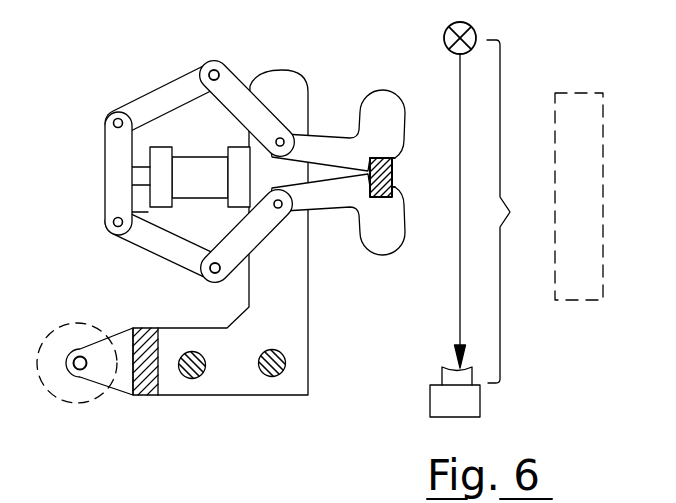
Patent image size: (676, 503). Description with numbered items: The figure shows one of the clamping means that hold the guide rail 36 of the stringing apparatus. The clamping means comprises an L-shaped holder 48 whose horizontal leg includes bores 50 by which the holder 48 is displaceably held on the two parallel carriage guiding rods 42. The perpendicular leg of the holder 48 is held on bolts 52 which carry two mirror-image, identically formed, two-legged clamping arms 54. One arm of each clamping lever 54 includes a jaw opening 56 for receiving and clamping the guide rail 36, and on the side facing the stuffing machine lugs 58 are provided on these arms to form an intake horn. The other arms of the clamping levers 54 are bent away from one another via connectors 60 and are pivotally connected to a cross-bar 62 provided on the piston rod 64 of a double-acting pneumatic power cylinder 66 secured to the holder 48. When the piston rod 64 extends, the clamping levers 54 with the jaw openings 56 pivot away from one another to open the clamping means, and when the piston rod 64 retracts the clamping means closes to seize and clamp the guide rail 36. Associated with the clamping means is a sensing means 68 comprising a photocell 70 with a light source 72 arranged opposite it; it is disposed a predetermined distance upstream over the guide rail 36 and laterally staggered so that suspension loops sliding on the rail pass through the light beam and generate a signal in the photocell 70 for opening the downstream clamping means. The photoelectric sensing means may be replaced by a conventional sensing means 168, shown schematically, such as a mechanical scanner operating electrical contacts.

The guide rail 36 is at (395, 182).
The carriage guiding rods 42 is at (283, 362).
The L-shaped holder 48 is at (299, 300).
The bores 50 is at (182, 378).
The bolts 52 is at (283, 142).
The clamping arms 54 is at (233, 83).
The jaw openings 56 is at (392, 152).
The lugs 58 is at (382, 98).
The connectors 60 is at (180, 88).
The cross-bar 62 is at (107, 168).
The piston rod 64 is at (140, 177).
The double-acting pneumatic power cylinder 66 is at (210, 190).
The sensing means 68 is at (515, 211).
The photocell 70 is at (482, 408).
The light source 72 is at (445, 38).
The conventional sensing means 168 is at (592, 303).